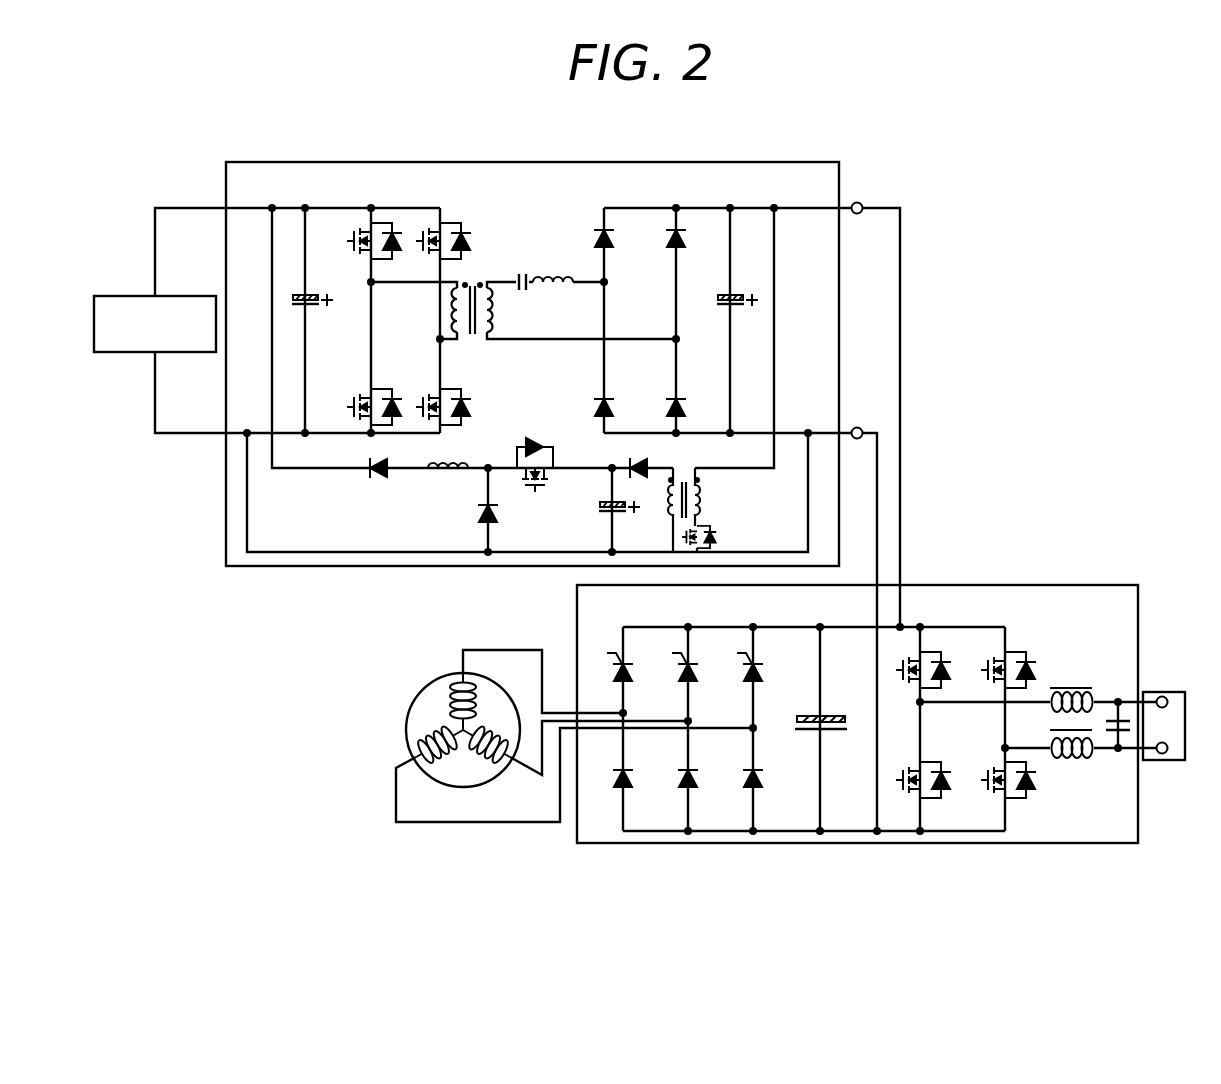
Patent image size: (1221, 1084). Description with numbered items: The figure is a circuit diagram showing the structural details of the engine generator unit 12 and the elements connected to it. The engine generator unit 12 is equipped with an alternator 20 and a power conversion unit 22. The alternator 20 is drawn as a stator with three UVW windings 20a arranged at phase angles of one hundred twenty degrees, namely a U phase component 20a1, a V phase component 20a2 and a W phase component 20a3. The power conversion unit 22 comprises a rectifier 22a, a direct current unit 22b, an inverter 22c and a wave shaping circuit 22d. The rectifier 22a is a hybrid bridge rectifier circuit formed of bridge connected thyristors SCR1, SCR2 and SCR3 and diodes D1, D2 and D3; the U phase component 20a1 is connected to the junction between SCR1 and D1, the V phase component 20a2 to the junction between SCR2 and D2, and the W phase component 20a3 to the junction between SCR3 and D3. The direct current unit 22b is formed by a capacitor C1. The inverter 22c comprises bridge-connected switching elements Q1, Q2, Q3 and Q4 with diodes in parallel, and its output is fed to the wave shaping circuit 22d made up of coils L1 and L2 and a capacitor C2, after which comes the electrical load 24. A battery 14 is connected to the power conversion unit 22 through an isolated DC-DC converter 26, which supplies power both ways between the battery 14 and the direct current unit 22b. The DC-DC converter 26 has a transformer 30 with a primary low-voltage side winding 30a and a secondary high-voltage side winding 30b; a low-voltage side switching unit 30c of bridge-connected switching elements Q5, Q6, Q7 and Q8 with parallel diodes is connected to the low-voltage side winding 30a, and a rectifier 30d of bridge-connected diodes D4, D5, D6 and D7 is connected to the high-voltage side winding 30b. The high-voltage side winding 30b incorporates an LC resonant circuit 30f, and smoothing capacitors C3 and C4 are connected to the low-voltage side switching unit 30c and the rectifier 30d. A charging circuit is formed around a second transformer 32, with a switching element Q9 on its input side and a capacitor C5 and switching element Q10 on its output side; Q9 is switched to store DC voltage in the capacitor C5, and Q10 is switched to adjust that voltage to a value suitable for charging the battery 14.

The engine generator unit 12 is at (510, 774).
The battery 14 is at (112, 296).
The alternator 20 is at (510, 754).
The UVW windings 20a is at (392, 722).
The U phase component 20a1 is at (449, 698).
The V phase component 20a2 is at (488, 757).
The W phase component 20a3 is at (437, 740).
The power conversion unit 22 is at (832, 773).
The rectifier 22a is at (675, 748).
The direct current unit 22b is at (822, 809).
The inverter 22c is at (959, 767).
The wave shaping circuit 22d is at (1088, 778).
The load 24 is at (1174, 692).
The DC-DC converter 26 is at (500, 162).
The transformer 30 is at (509, 325).
The low-voltage side winding 30a is at (458, 282).
The high-voltage side winding 30b is at (481, 352).
The low-voltage side switching unit 30c is at (412, 296).
The rectifier 30d is at (635, 292).
The LC resonant circuit 30f is at (527, 292).
The second transformer 32 is at (692, 503).
The switching element Q1 is at (896, 670).
The switching element Q2 is at (981, 670).
The switching element Q3 is at (896, 780).
The switching element Q4 is at (1033, 843).
The switching element Q5 is at (347, 241).
The switching element Q6 is at (416, 241).
The switching element Q7 is at (347, 407).
The switching element Q8 is at (416, 407).
The switching element Q9 is at (712, 537).
The switching element Q10 is at (535, 492).
The capacitor C1 is at (836, 731).
The capacitor C2 is at (1119, 767).
The smoothing capacitor C3 is at (307, 306).
The smoothing capacitor C4 is at (738, 306).
The capacitor C5 is at (604, 512).
The diode D1 is at (618, 781).
The diode D2 is at (683, 781).
The diode D3 is at (739, 794).
The diode D4 is at (614, 248).
The diode D5 is at (682, 248).
The diode D6 is at (632, 391).
The diode D7 is at (705, 391).
The coil L1 is at (1058, 688).
The coil L2 is at (1054, 760).
The thyristor SCR1 is at (614, 672).
The thyristor SCR2 is at (680, 673).
The thyristor SCR3 is at (746, 673).